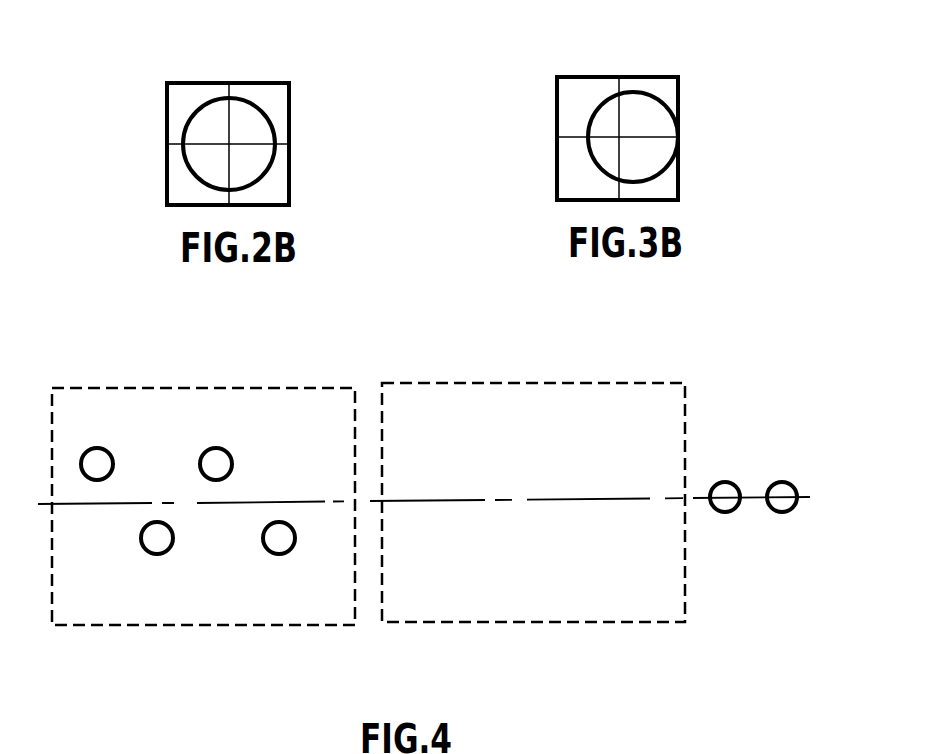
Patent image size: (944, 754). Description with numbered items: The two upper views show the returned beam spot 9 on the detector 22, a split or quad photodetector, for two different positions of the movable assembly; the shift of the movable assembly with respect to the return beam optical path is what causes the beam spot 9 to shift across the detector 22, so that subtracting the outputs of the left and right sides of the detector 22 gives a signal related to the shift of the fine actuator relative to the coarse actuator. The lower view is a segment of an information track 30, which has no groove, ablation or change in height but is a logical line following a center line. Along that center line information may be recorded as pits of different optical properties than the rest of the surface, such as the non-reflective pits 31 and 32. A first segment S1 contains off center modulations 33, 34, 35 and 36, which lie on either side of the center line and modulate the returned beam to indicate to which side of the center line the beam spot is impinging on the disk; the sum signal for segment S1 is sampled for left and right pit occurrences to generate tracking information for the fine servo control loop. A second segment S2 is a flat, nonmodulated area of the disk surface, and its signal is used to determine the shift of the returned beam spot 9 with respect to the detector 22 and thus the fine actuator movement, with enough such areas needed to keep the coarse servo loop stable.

In FIG. 2B, the beam spot 9 is at (253, 100).
In FIG. 3B, the beam spot 9 is at (657, 92).
In FIG. 2B, the detector 22 is at (195, 83).
In FIG. 3B, the detector 22 is at (678, 170).
In FIG. 4, the track 30 is at (752, 464).
In FIG. 4, the non-reflective pit 31 is at (722, 512).
In FIG. 4, the non-reflective pit 32 is at (790, 512).
In FIG. 4, the off center modulation 33 is at (97, 458).
In FIG. 4, the off center modulation 34 is at (216, 458).
In FIG. 4, the off center modulation 35 is at (157, 545).
In FIG. 4, the off center modulation 36 is at (279, 545).
In FIG. 4, the segment S1 is at (227, 625).
In FIG. 4, the segment S2 is at (488, 622).